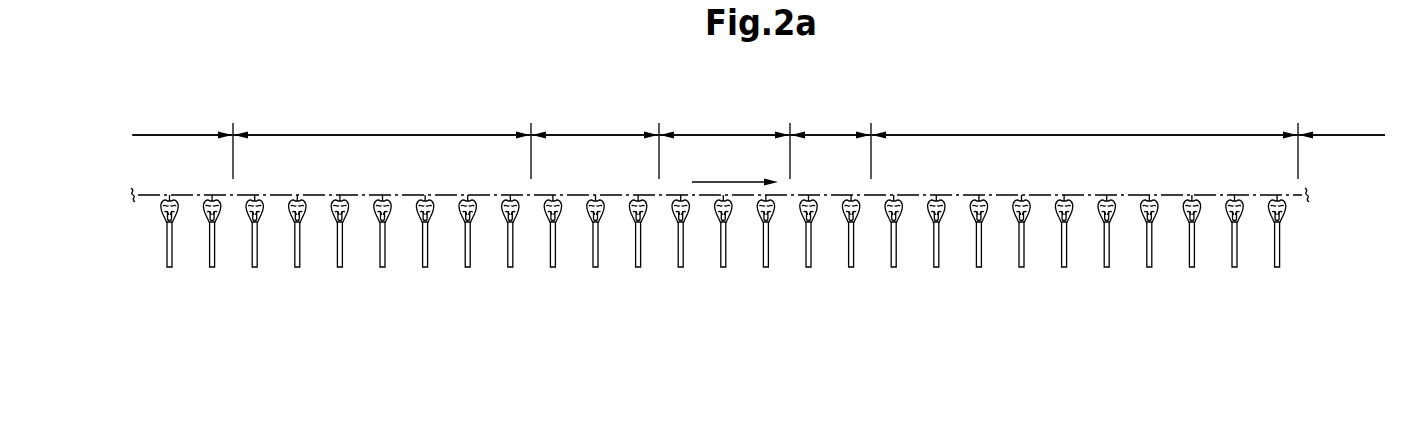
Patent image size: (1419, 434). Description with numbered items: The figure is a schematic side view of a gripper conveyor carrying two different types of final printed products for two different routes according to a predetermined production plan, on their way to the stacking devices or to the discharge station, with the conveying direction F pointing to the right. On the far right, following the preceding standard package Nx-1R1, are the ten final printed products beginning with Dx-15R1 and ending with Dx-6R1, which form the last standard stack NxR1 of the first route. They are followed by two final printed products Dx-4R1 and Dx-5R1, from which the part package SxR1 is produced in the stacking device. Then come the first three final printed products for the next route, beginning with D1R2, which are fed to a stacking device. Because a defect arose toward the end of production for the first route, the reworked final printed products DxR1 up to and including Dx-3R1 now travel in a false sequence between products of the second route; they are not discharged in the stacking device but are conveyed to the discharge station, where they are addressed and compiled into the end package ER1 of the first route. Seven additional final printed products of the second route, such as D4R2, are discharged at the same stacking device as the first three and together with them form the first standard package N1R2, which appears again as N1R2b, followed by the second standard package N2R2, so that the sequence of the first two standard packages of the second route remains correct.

The second standard package of the second route N2R2 is at (182, 119).
The first standard package of the second route N1R2 is at (382, 119).
The end package of the first route ER1 is at (595, 119).
The first standard package of the second route N1R2b is at (724, 119).
The part package of the first route SxR1 is at (830, 119).
The last standard package of the first route NxR1 is at (1084, 119).
The preceding standard package of the first route Nx-1R1 is at (1342, 119).
The conveying direction F is at (733, 182).
The fourth final printed product of the second route D4R2 is at (510, 266).
The final printed product x of the first route DxR1 is at (552, 265).
The final printed product x-3 of the first route Dx-3R1 is at (638, 265).
The first final printed product of the second route D1R2 is at (766, 265).
The final printed product x-4 of the first route Dx-4R1 is at (808, 265).
The final printed product x-5 of the first route Dx-5R1 is at (851, 265).
The final printed product x-6 of the first route Dx-6R1 is at (894, 265).
The final printed product x-15 of the first route Dx-15R1 is at (1277, 265).